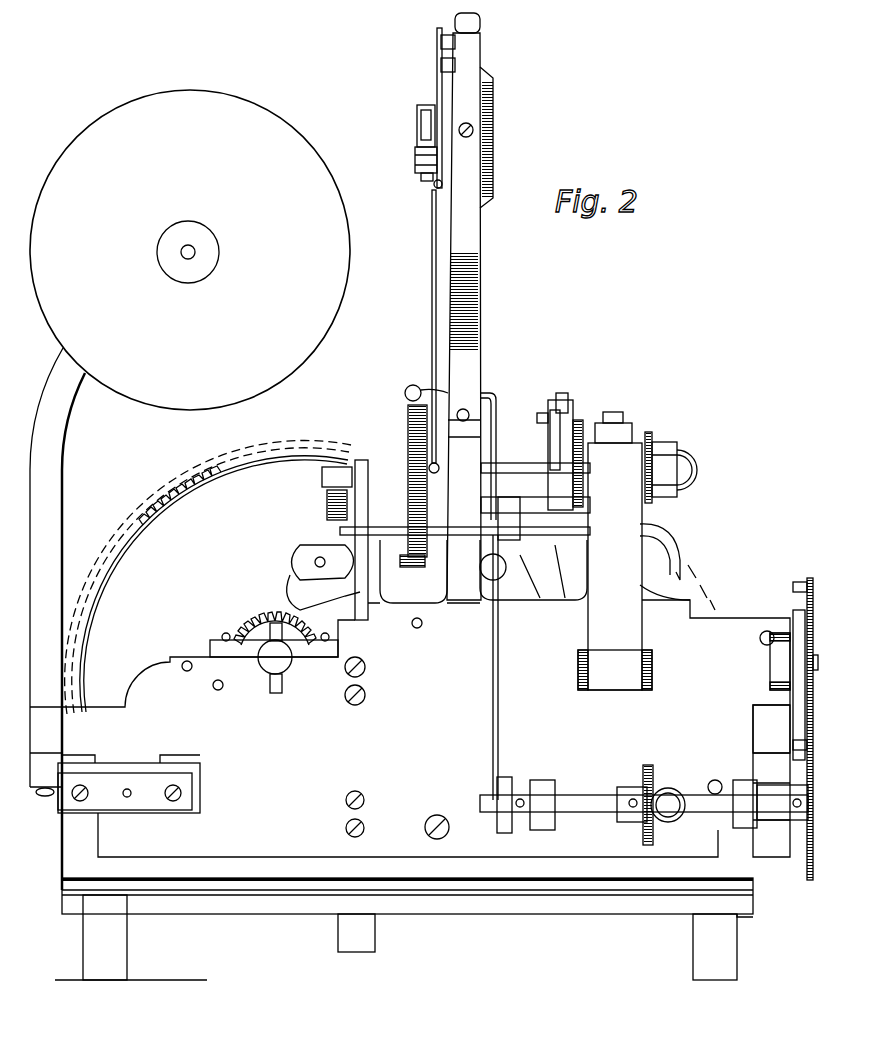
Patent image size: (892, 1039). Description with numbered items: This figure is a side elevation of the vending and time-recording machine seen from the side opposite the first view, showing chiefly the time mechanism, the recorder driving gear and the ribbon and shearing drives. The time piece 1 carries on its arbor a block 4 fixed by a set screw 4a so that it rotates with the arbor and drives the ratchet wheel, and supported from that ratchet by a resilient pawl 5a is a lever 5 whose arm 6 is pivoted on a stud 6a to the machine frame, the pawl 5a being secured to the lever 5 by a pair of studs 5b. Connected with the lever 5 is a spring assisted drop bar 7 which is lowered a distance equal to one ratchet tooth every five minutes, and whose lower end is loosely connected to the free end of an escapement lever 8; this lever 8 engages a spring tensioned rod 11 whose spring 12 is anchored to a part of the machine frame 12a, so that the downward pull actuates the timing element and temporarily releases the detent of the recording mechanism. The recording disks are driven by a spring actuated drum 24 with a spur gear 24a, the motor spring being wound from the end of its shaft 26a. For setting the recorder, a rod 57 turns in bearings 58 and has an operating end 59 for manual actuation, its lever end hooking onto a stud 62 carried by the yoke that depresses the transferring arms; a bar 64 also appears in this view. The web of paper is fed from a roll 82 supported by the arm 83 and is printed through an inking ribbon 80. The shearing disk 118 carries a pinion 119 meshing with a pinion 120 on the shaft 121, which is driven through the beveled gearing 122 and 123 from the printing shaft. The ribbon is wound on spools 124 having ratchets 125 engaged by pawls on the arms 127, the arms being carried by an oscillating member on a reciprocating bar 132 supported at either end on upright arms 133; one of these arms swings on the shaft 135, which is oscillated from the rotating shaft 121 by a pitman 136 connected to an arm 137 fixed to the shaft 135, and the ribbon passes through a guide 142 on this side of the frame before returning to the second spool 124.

The time piece 1 is at (485, 130).
The block 4 is at (417, 128).
The set screw 4a is at (425, 181).
The lever 5 is at (437, 72).
The resilient pawl 5a is at (441, 82).
The studs 5b is at (440, 42).
The arm 6 is at (445, 183).
The stud 6a is at (415, 160).
The drop bar 7 is at (432, 245).
The escapement lever 8 is at (504, 467).
The spring tensioned rod 11 is at (492, 390).
The spring 12 is at (408, 415).
The part of the machine frame 12a is at (418, 628).
The spring actuated drum 24 is at (208, 576).
The spur gear 24a is at (208, 466).
The shaft 26a is at (273, 660).
The rod 57 is at (472, 532).
The bearings 58 is at (340, 547).
The operating end 59 is at (685, 545).
The stud 62 is at (322, 520).
The bar 64 is at (361, 474).
The inking ribbon 80 is at (615, 551).
The roll 82 is at (177, 398).
The arm 83 is at (57, 447).
The disk 118 is at (793, 587).
The pinion 119 is at (810, 580).
The pinion 120 is at (810, 880).
The shaft 121 is at (706, 812).
The beveled gearing 122 is at (648, 778).
The beveled gearing 123 is at (690, 780).
The spools 124 is at (584, 446).
The ratchets 125 is at (650, 440).
The arms 127 is at (575, 400).
The reciprocating bar 132 is at (556, 412).
The upright arms 133 is at (540, 424).
The shaft 135 is at (565, 515).
The pitman 136 is at (499, 678).
The arm 137 is at (512, 503).
The guide 142 is at (655, 686).